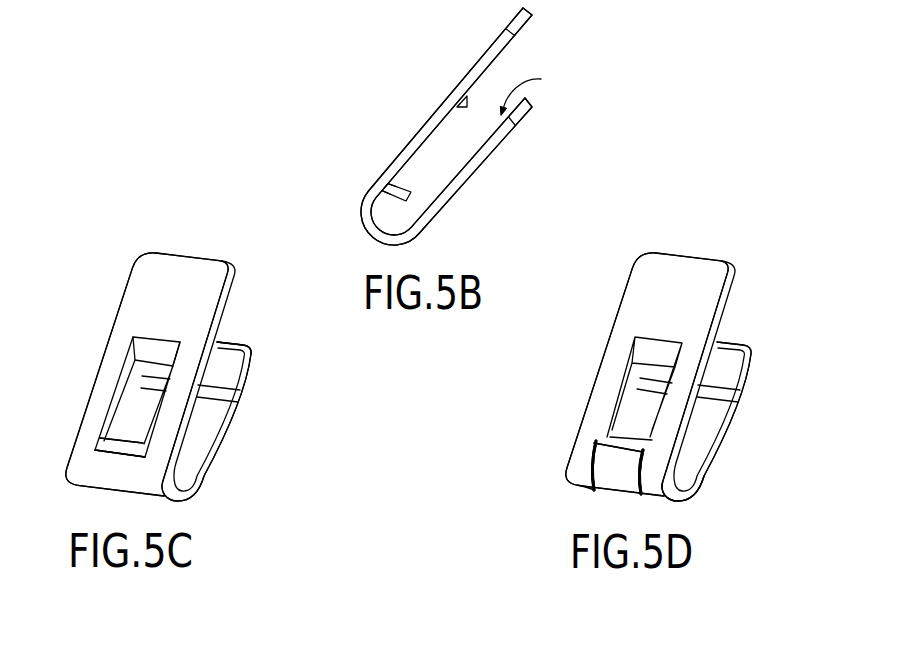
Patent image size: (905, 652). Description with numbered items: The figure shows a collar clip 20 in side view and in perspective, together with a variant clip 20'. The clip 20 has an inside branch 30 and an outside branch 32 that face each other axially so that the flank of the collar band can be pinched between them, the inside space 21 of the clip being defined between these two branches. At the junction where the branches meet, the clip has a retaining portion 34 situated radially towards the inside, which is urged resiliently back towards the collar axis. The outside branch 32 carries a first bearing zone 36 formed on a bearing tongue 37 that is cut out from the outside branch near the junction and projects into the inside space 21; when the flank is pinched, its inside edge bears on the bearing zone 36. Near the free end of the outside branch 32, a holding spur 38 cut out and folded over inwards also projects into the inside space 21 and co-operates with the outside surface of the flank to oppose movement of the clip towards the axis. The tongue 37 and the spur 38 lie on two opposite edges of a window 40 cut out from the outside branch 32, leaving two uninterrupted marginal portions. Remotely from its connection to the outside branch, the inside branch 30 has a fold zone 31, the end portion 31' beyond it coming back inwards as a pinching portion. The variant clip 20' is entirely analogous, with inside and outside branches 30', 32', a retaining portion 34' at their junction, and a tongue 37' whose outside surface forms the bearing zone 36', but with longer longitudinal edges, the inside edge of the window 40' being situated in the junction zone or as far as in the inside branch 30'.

In FIG. 5B, the clip 20 is at (436, 126).
In FIG. 5C, the clip 20 is at (158, 346).
In FIG. 5D, the clip (variant) 20' is at (674, 341).
In FIG. 5B, the inside space 21 is at (533, 92).
In FIG. 5B, the inside branch 30 is at (472, 165).
In FIG. 5C, the inside branch 30 is at (206, 421).
In FIG. 5D, the inside branch (variant) 30' is at (717, 421).
In FIG. 5C, the fold zone 31 is at (237, 401).
In FIG. 5C, the end portion 31' is at (242, 325).
In FIG. 5B, the outside branch 32 is at (451, 102).
In FIG. 5C, the outside branch 32 is at (150, 374).
In FIG. 5D, the outside branch (variant) 32' is at (650, 374).
In FIG. 5B, the retaining portion 34 is at (375, 223).
In FIG. 5D, the retaining portion (variant) 34' is at (690, 500).
In FIG. 5B, the first bearing zone 36 is at (415, 176).
In FIG. 5C, the first bearing zone 36 is at (86, 421).
In FIG. 5D, the bearing zone (variant) 36' is at (575, 440).
In FIG. 5B, the bearing tongue 37 is at (367, 174).
In FIG. 5C, the bearing tongue 37 is at (86, 421).
In FIG. 5D, the tongue (variant) 37' is at (575, 440).
In FIG. 5B, the holding spur 38 is at (469, 103).
In FIG. 5C, the holding spur 38 is at (157, 349).
In FIG. 5C, the window 40 is at (177, 397).
In FIG. 5D, the window (variant) 40' is at (624, 379).